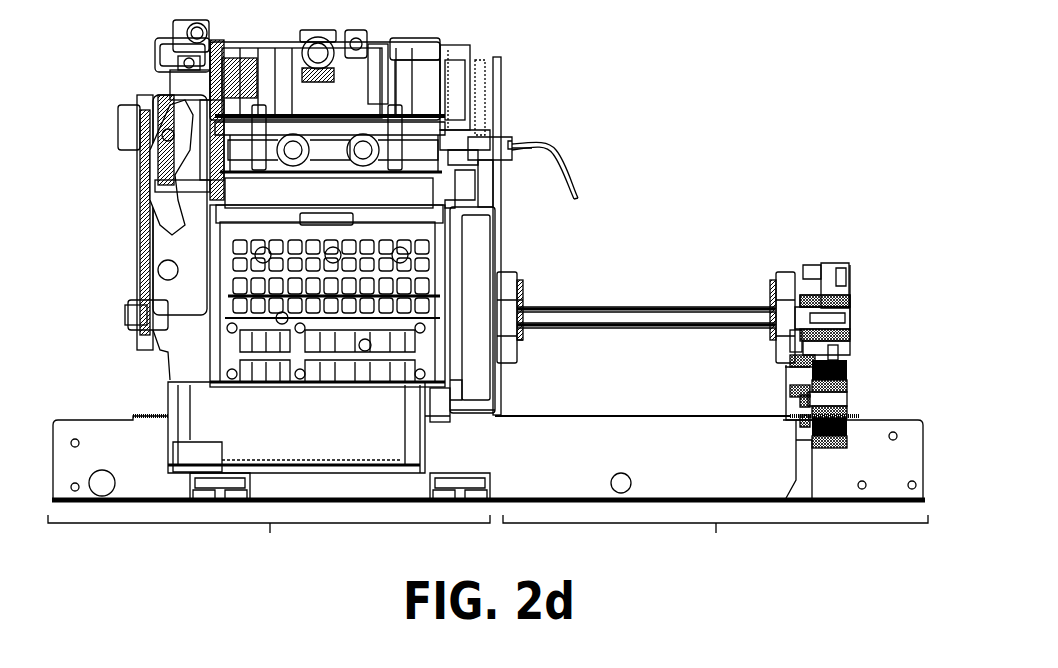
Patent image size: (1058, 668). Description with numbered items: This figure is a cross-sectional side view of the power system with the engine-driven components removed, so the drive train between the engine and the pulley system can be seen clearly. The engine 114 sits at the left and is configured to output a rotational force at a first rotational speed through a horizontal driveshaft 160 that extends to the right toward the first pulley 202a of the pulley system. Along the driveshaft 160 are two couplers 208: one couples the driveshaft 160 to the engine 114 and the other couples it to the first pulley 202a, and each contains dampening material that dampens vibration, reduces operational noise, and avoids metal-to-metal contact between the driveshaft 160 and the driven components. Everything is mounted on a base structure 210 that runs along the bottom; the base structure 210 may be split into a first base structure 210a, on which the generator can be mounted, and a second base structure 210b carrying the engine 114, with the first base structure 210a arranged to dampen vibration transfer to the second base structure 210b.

The engine 114 is at (384, 50).
The driveshaft 160 is at (632, 328).
The couplers 208 is at (508, 270).
The first pulley 202a is at (852, 284).
The base structure 210 is at (923, 410).
The first base structure 210a is at (715, 538).
The second base structure 210b is at (269, 538).